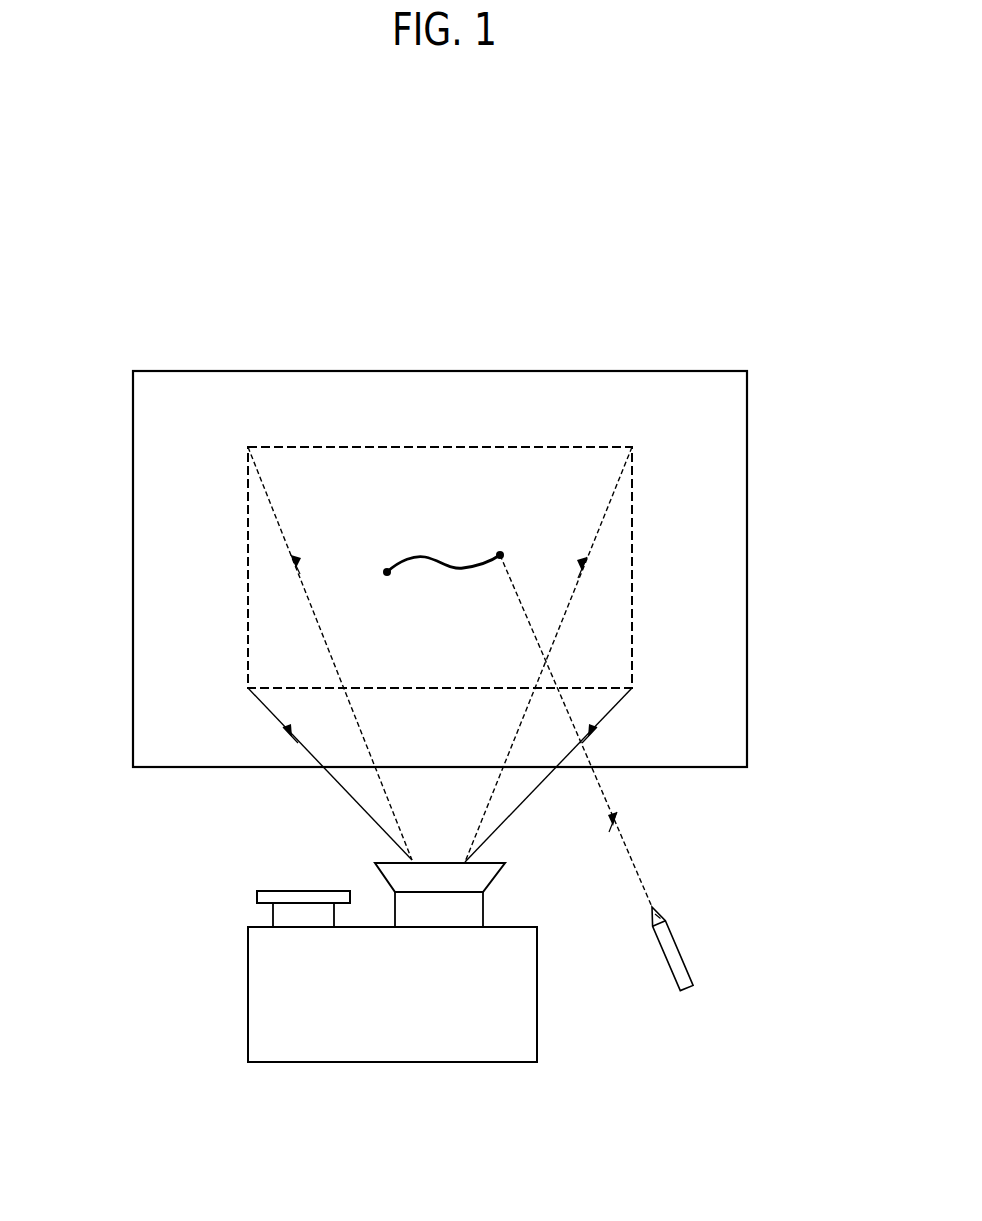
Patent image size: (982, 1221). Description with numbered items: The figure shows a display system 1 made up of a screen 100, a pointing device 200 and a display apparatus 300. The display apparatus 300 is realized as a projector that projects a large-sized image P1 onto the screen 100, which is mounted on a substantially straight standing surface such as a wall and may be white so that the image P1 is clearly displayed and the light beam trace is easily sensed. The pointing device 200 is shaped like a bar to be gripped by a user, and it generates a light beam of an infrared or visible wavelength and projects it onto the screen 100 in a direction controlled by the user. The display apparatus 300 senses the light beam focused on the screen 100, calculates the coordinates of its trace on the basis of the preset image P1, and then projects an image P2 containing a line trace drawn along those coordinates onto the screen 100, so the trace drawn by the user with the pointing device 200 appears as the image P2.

The display system 1 is at (778, 310).
The screen 100 is at (747, 592).
The pointing device 200 is at (678, 950).
The display apparatus 300 is at (537, 1000).
The image P1 is at (248, 547).
The image P2 is at (425, 557).